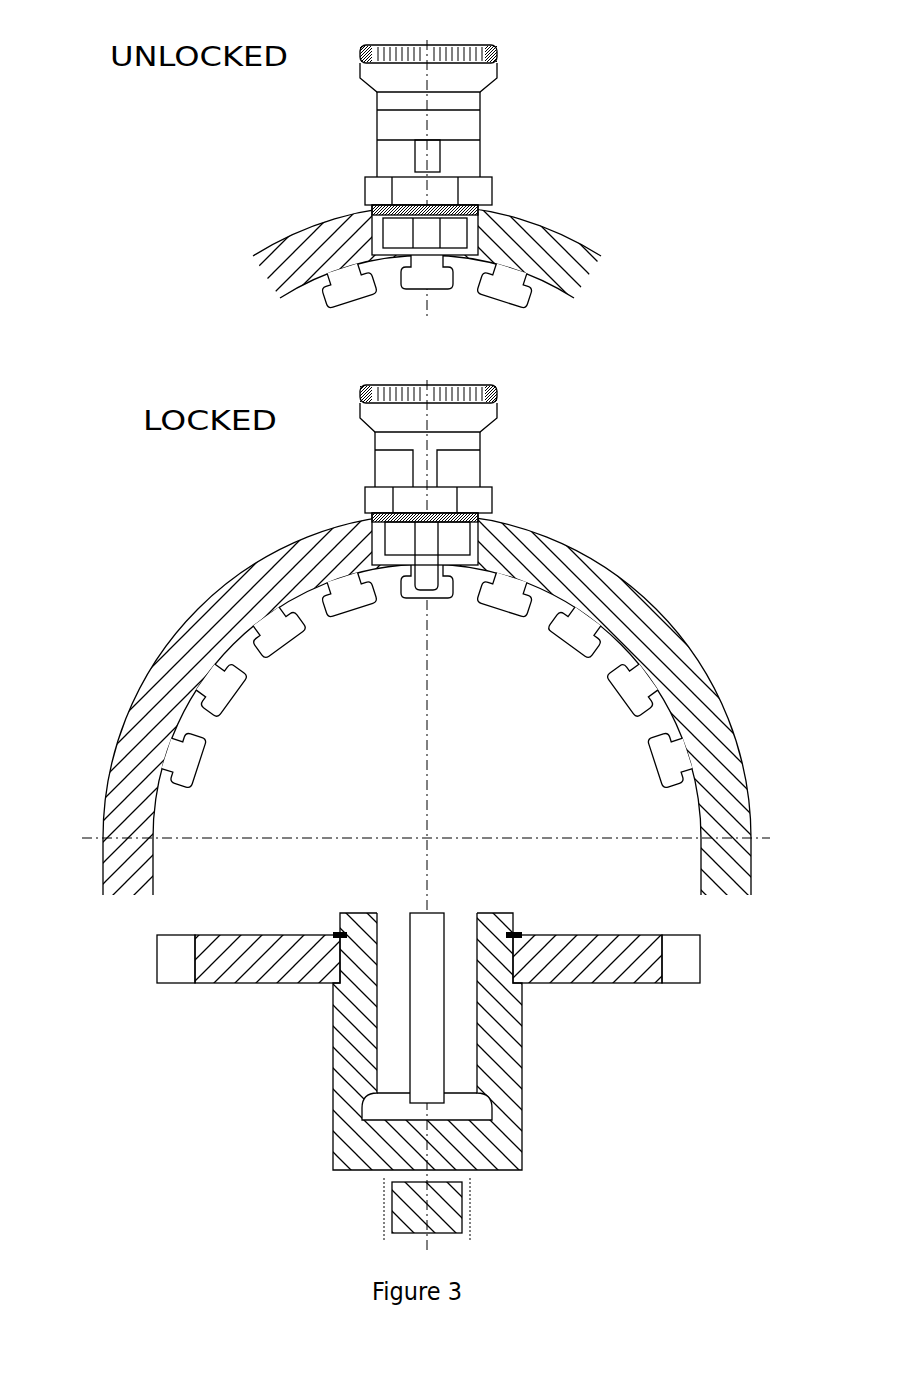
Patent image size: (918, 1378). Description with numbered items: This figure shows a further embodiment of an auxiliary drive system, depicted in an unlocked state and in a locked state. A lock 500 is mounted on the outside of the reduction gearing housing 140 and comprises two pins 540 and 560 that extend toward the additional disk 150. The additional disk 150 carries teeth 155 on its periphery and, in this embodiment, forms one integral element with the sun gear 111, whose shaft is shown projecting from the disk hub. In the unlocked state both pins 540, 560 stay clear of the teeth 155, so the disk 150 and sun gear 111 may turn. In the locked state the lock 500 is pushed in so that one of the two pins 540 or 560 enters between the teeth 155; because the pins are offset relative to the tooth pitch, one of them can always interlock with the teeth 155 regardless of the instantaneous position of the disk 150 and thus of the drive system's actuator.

The lock 500 is at (538, 82).
The pin 540 is at (450, 232).
The pin 560 is at (392, 232).
The reduction gearing housing 140 is at (625, 627).
The teeth 155 is at (180, 968).
The additional disk 150 is at (252, 968).
The sun gear 111 is at (442, 1222).